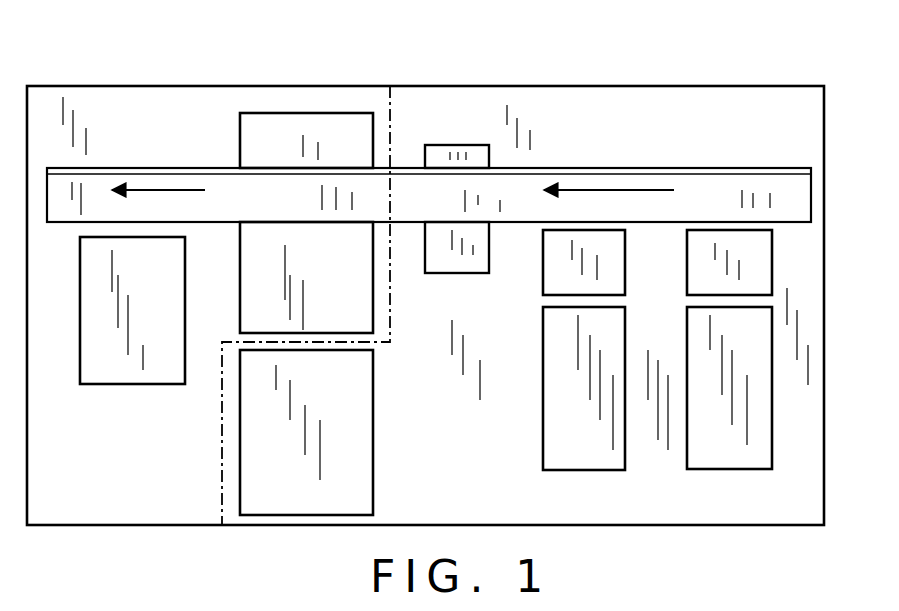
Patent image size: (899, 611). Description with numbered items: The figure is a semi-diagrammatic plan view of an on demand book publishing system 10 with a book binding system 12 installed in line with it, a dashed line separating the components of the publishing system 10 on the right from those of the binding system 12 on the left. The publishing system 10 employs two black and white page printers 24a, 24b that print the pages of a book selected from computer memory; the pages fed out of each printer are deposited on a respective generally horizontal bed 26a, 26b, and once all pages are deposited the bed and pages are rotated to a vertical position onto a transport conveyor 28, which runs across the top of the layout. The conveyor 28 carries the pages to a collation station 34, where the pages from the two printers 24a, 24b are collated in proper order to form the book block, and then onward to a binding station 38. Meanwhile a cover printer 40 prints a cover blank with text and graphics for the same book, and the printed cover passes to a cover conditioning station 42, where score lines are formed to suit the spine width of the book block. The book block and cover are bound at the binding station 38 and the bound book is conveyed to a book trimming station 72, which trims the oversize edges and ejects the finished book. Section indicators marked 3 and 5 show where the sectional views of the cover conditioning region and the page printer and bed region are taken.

The on demand book publishing system 10 is at (640, 68).
The book binding system 12 is at (192, 70).
The transport conveyor 28 is at (563, 163).
The collation station 34 is at (470, 140).
The binding station 38 is at (274, 210).
The cover printer 40 is at (380, 452).
The cover conditioning station 42 is at (338, 128).
The book trimming station 72 is at (141, 390).
The page printer 24a is at (772, 405).
The page printer 24b is at (543, 420).
The bed 26a is at (772, 276).
The bed 26b is at (543, 278).
The section line 3- 3 is at (316, 102).
The section line 5- 5 is at (718, 185).